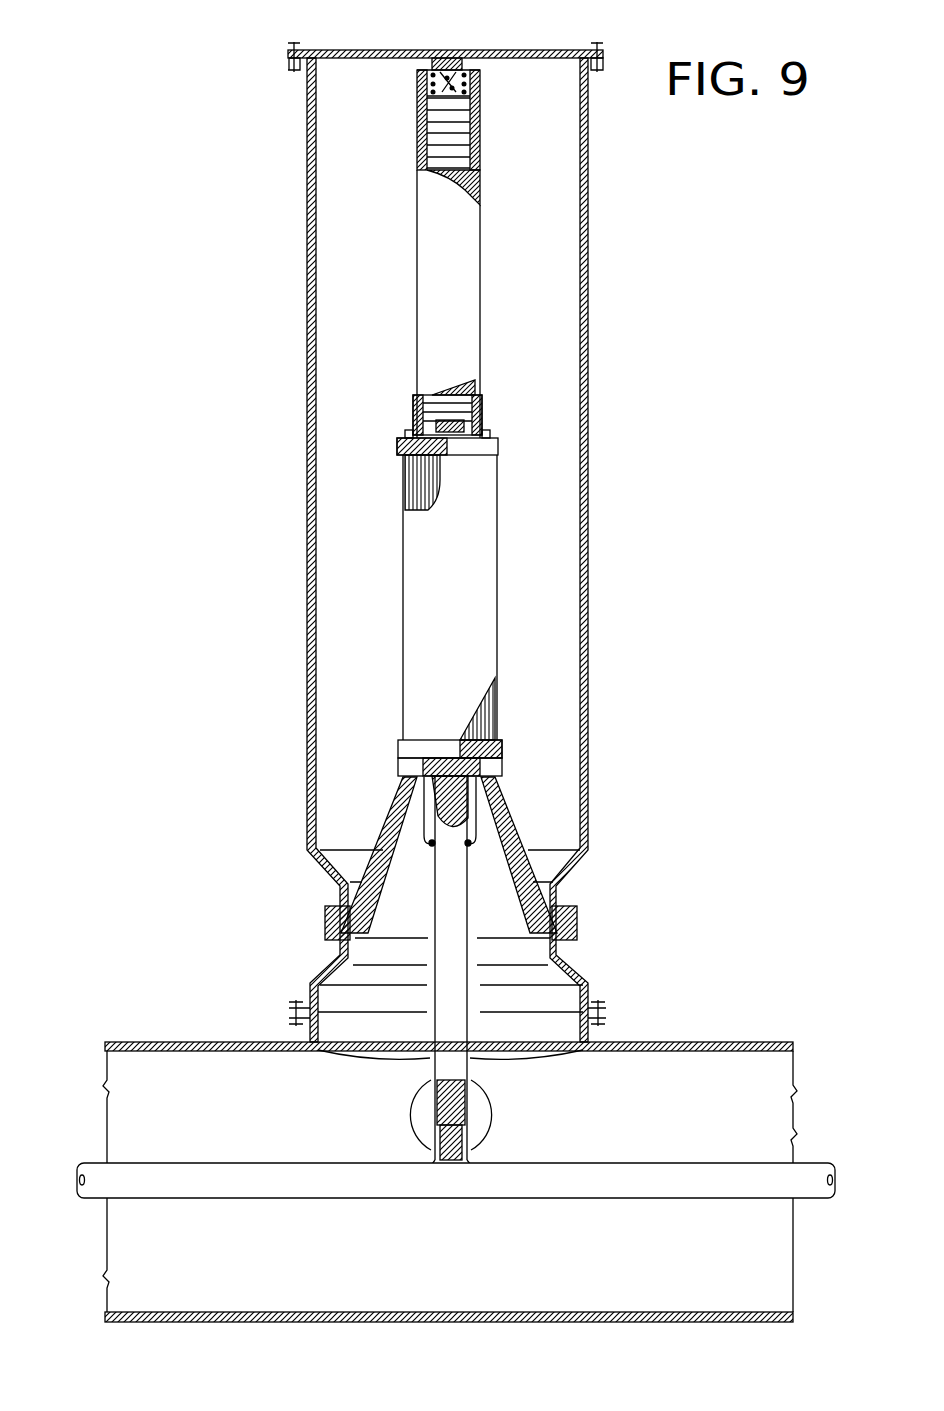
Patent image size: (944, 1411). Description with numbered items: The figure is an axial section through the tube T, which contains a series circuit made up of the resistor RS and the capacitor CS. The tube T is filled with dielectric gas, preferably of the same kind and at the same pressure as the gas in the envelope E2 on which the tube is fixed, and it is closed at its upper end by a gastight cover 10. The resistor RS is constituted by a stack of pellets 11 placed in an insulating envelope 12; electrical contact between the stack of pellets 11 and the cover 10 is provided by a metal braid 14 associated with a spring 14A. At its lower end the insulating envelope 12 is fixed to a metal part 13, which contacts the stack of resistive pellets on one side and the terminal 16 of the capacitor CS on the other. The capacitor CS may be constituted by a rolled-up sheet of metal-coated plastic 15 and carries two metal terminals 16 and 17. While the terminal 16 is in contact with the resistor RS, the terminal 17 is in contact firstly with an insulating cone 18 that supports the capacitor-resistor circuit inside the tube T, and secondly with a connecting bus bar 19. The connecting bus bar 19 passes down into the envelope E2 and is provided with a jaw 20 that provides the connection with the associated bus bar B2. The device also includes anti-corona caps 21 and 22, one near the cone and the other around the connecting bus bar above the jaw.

The gastight cover 10 is at (523, 14).
The metal braid 14 is at (443, 68).
The spring 14A is at (478, 82).
The pellets 11 is at (470, 136).
The insulating envelope 12 is at (476, 176).
The resistor RS is at (462, 274).
The metal part 13 is at (480, 405).
The terminal 16 is at (400, 440).
The rolled-up sheet of metal-coated plastic 15 is at (405, 478).
The capacitor CS is at (480, 582).
The terminal 17 is at (500, 745).
The insulating cone 18 is at (505, 830).
The anti-corona cap 21 is at (425, 845).
The connecting bus bar 19 is at (458, 1032).
The anti-corona cap 22 is at (493, 1112).
The jaw 20 is at (465, 1180).
The tube T is at (588, 253).
The envelope E2 is at (690, 1040).
The bus bar B2 is at (685, 1188).